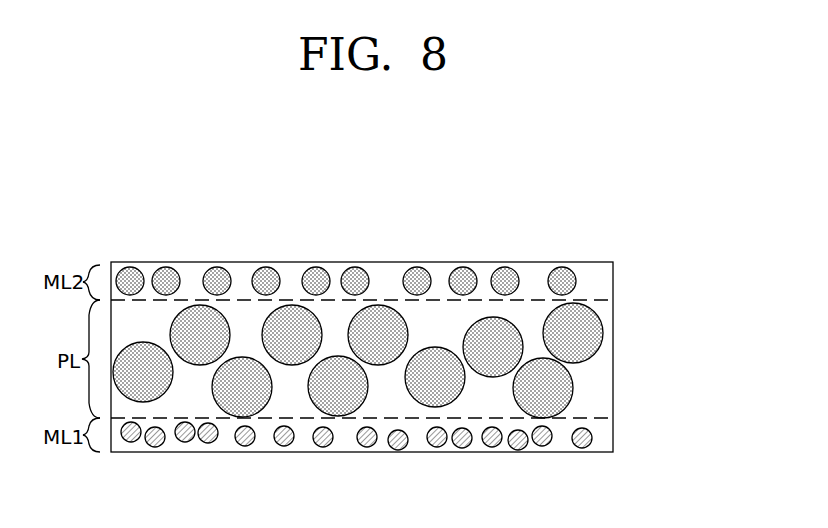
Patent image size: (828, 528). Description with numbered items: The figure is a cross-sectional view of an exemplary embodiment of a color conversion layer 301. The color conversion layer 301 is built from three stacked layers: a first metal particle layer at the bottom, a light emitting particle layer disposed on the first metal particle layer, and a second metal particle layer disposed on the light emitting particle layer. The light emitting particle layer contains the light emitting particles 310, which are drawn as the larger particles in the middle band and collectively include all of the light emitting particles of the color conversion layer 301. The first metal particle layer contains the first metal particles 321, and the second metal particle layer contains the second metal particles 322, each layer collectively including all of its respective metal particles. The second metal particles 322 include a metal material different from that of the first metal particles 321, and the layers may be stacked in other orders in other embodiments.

The color conversion layer 301 is at (594, 214).
The light emitting particles 310 is at (593, 333).
The first metal particles 321 is at (585, 437).
The second metal particles 322 is at (565, 280).